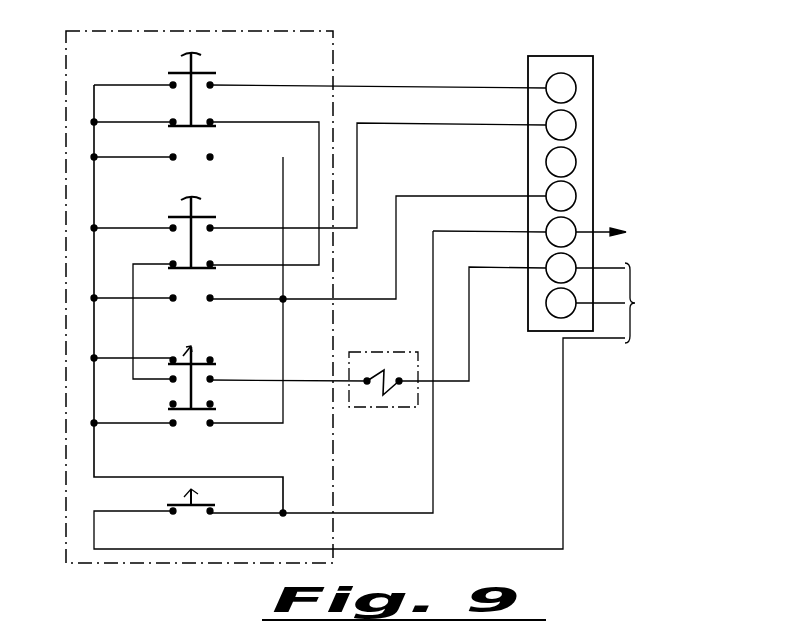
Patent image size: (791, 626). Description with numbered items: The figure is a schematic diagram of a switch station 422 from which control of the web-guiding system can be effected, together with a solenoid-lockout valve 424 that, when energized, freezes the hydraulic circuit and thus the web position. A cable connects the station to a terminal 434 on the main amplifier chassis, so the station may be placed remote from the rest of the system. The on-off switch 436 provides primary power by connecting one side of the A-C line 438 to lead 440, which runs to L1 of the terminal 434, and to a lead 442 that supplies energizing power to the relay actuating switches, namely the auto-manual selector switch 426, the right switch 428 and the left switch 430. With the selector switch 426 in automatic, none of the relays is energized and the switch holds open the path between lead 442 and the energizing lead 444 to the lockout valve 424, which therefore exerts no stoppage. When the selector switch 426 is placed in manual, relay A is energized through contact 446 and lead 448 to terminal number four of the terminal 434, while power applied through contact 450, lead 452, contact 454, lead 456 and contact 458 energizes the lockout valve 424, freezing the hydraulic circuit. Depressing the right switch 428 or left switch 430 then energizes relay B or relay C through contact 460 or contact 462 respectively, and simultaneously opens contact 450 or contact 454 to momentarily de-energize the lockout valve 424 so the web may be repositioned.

The switch station 422 is at (181, 27).
The solenoid-lockout valve 424 is at (396, 346).
The selector switch 426 is at (192, 350).
The right switch 428 is at (202, 55).
The left switch 430 is at (200, 199).
The terminal 434 is at (553, 56).
The on-off switch 436 is at (197, 511).
The A-C line 438 is at (118, 549).
The lead 440 is at (433, 470).
The lead 442 is at (94, 181).
The energizing lead 444 is at (316, 381).
The contact 446 is at (194, 415).
The lead 448 is at (377, 299).
The contact 450 is at (210, 128).
The lead 452 is at (319, 149).
The contact 454 is at (206, 268).
The lead 456 is at (133, 314).
The contact 458 is at (199, 372).
The contact 460 is at (197, 76).
The contact 462 is at (198, 221).